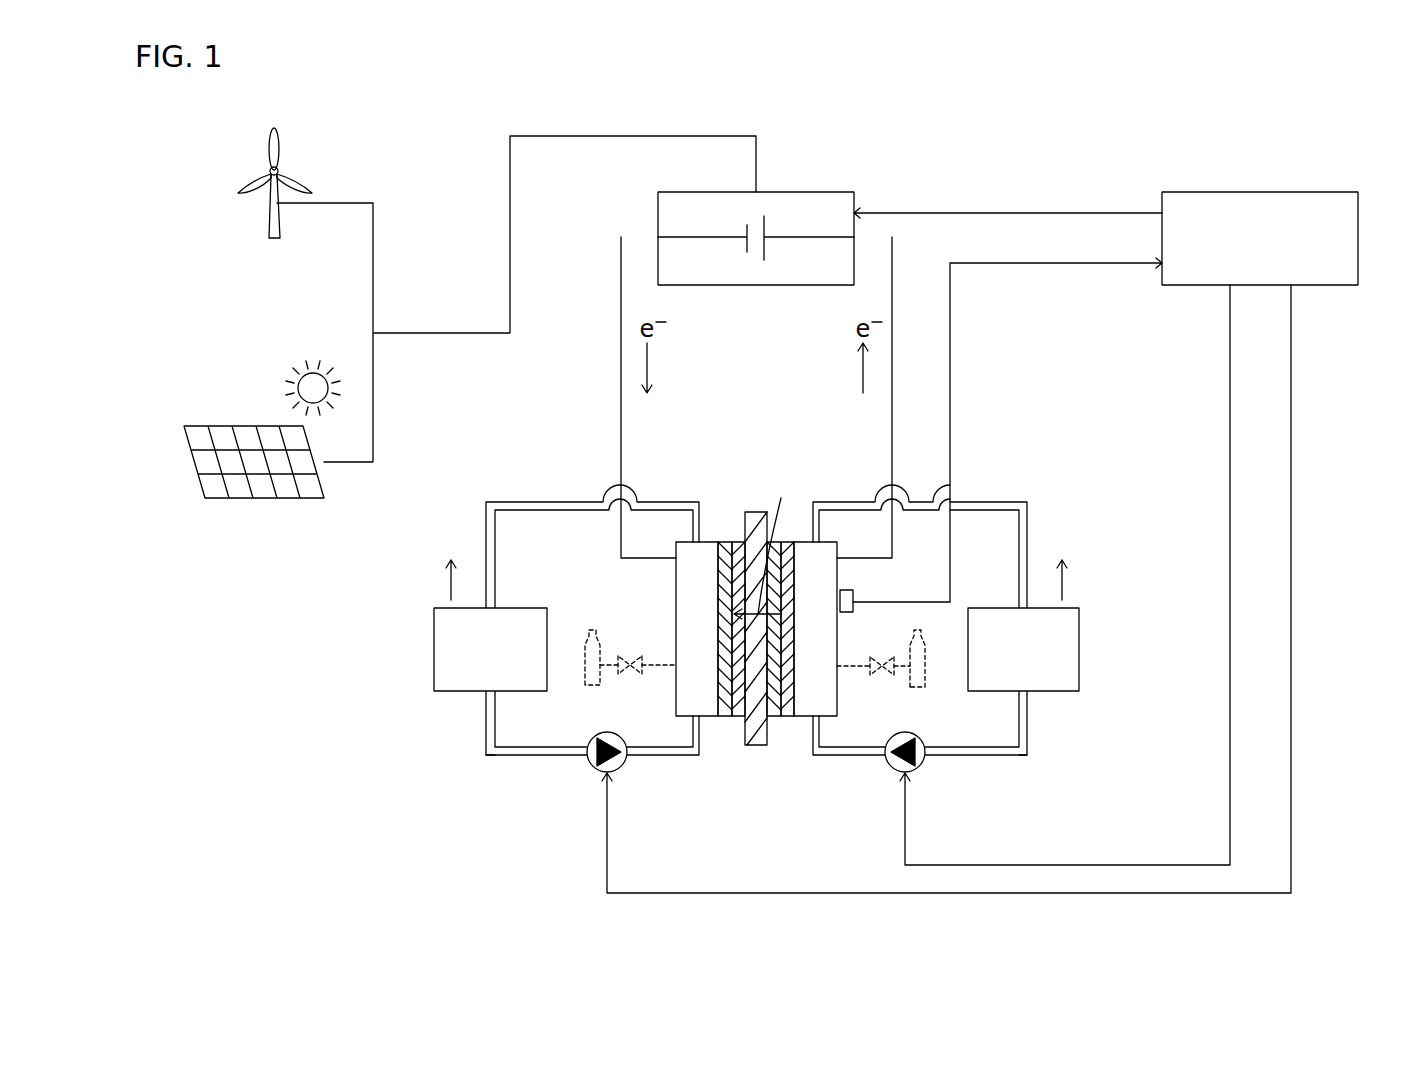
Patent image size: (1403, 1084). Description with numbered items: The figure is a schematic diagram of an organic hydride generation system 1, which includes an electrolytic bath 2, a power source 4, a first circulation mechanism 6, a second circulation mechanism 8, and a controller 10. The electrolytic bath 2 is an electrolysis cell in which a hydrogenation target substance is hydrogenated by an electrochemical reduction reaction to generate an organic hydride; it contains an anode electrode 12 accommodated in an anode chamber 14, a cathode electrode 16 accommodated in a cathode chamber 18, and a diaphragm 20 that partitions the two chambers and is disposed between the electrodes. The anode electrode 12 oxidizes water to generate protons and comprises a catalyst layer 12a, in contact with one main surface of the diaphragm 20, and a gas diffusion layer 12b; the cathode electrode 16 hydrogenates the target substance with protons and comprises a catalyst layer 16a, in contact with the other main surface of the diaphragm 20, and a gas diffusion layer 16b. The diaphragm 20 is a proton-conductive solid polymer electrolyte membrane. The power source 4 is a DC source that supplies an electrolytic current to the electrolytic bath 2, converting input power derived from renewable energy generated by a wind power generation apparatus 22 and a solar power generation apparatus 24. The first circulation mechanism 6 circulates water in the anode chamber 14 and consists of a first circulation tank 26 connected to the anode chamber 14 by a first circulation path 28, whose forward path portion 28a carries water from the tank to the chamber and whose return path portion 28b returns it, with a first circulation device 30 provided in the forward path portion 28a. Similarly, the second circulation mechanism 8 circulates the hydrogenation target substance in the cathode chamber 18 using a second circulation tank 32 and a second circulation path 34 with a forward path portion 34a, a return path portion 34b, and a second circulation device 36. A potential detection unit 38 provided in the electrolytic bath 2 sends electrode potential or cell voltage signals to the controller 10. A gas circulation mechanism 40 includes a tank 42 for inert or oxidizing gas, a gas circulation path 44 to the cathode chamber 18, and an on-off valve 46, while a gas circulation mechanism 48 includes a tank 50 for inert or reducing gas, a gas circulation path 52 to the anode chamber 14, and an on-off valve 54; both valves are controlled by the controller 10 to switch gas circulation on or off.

The organic hydride generation system 1 is at (770, 958).
The electrolytic bath 2 is at (759, 662).
The power source 4 is at (820, 191).
The first circulation mechanism 6 is at (1032, 771).
The second circulation mechanism 8 is at (490, 771).
The controller 10 is at (1329, 182).
The anode electrode 12 is at (823, 699).
The catalyst layer 12a is at (773, 718).
The gas diffusion layer 12b is at (787, 718).
The anode chamber 14 is at (828, 725).
The cathode electrode 16 is at (697, 699).
The catalyst layer 16a is at (738, 718).
The gas diffusion layer 16b is at (725, 718).
The cathode chamber 18 is at (672, 735).
The diaphragm 20 is at (756, 747).
The wind power generation apparatus 22 is at (314, 160).
The solar power generation apparatus 24 is at (322, 513).
The first circulation tank 26 is at (1079, 655).
The first circulation path 28 is at (963, 590).
The forward path portion 28a is at (1027, 724).
The return path portion 28b is at (1027, 520).
The first circulation device 30 is at (918, 735).
The second circulation tank 32 is at (434, 655).
The second circulation path 34 is at (549, 590).
The forward path portion 34a is at (486, 724).
The return path portion 34b is at (486, 520).
The second circulation device 36 is at (603, 733).
The potential detection unit 38 is at (856, 595).
The gas circulation mechanism 40 is at (613, 617).
The tank 42 is at (586, 645).
The gas circulation path 44 is at (609, 612).
The on-off valve 46 is at (631, 655).
The gas circulation mechanism 48 is at (912, 625).
The tank 50 is at (930, 660).
The gas circulation path 52 is at (914, 629).
The on-off valve 54 is at (884, 657).